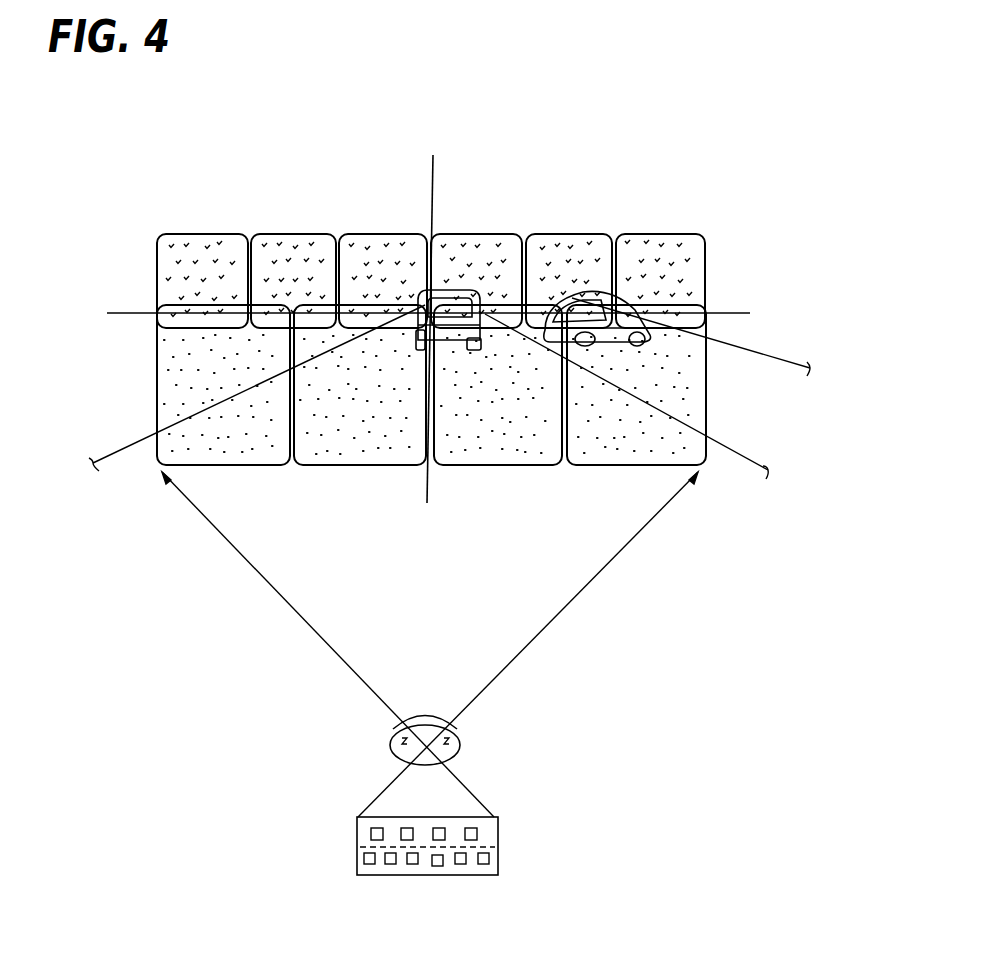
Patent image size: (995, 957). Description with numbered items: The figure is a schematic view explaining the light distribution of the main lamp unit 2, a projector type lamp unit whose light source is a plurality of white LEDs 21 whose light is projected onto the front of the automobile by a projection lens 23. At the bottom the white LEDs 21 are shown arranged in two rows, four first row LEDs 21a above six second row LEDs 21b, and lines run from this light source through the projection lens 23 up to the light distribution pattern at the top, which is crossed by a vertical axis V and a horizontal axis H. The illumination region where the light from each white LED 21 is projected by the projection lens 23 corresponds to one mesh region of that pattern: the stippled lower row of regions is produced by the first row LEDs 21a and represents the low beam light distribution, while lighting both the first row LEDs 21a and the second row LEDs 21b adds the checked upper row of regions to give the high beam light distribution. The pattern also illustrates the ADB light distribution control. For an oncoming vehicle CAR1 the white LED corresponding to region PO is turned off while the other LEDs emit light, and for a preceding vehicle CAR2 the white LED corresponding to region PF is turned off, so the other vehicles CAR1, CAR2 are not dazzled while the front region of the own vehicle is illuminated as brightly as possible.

The main lamp unit 2 is at (430, 673).
The white light emitting diodes 21 is at (498, 855).
The first row LEDs 21a is at (157, 368).
The second row LEDs 21b is at (158, 275).
The projection lens 23 is at (460, 747).
The oncoming vehicle CAR1 is at (620, 300).
The preceding vehicle CAR2 is at (430, 305).
The region PF is at (475, 235).
The region PO is at (614, 236).
The vertical axis V is at (435, 313).
The horizontal axis H is at (441, 316).